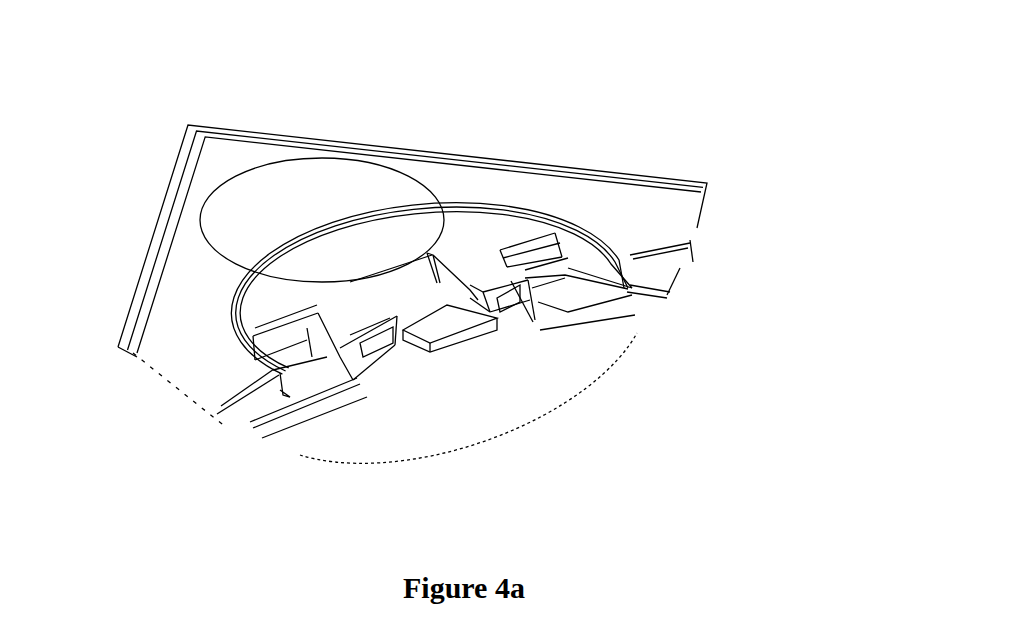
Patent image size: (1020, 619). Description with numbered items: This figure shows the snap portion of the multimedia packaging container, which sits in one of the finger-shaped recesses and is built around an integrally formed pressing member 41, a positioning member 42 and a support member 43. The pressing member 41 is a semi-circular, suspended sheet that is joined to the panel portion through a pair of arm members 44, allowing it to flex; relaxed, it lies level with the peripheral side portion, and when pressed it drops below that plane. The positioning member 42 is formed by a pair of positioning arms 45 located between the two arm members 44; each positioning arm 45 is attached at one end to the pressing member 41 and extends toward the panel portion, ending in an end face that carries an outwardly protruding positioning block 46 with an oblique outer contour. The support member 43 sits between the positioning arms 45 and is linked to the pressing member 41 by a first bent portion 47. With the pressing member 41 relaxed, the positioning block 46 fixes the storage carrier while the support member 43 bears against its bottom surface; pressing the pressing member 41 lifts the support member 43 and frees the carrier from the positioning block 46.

The pressing member 41 is at (242, 181).
The positioning member 42 is at (451, 191).
The support member 43 is at (496, 374).
The arm member 44 is at (621, 180).
The positioning arm 45 is at (695, 294).
The positioning block 46 is at (594, 349).
The first bent portion 47 is at (335, 397).